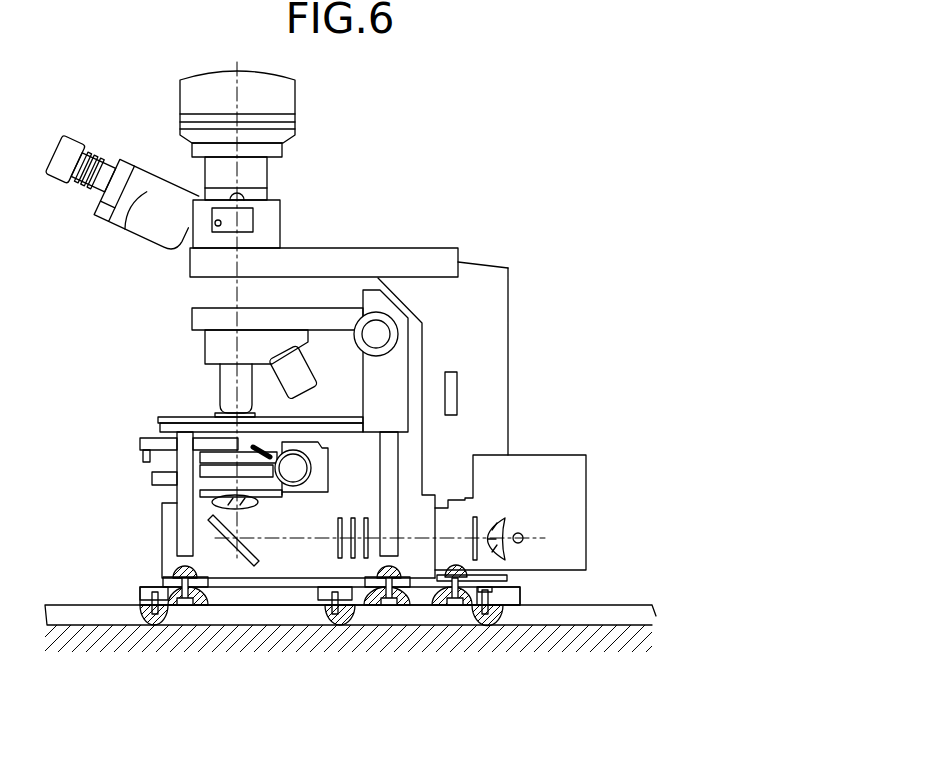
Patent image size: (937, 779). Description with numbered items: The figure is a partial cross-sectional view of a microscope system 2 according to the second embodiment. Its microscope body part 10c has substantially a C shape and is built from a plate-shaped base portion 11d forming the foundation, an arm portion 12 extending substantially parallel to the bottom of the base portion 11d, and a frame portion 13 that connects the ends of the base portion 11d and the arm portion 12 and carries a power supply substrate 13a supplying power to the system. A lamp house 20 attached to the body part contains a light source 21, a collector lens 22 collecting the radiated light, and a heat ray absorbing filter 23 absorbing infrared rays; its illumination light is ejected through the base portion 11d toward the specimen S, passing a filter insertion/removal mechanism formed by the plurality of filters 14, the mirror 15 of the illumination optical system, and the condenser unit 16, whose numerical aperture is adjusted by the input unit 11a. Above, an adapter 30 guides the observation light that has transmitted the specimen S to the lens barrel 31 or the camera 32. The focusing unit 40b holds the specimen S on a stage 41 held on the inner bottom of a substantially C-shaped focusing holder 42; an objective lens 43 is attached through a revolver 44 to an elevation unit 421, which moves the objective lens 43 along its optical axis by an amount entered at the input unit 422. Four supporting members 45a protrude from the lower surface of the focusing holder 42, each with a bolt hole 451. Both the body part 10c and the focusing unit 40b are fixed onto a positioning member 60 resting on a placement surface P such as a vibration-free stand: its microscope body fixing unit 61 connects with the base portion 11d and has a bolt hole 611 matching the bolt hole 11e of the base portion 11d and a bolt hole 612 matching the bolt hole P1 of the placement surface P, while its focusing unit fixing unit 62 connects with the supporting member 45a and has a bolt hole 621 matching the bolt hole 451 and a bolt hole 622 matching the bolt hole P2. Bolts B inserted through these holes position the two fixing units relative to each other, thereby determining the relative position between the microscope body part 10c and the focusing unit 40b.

The microscope system 2 is at (410, 116).
The camera 32 is at (292, 95).
The lens barrel 31 is at (133, 157).
The adapter 30 is at (272, 212).
The arm portion 12 is at (374, 256).
The microscope body part 10c is at (484, 250).
The frame portion 13 is at (493, 425).
The power supply substrate 13a is at (457, 393).
The elevation unit 421 is at (197, 318).
The focusing holder 42 is at (398, 360).
The input unit 422 is at (398, 332).
The revolver 44 is at (213, 345).
The focusing unit 40b is at (138, 357).
The objective lens 43 is at (228, 380).
The specimen S is at (215, 413).
The stage 41 is at (158, 420).
The condenser unit 16 is at (128, 458).
The input unit 11a is at (313, 463).
The filters 14 is at (366, 516).
The supporting member 45a is at (178, 493).
The mirror 15 is at (208, 530).
The base portion 11d is at (273, 555).
The lamp house 20 is at (570, 472).
The heat ray absorbing filter 23 is at (484, 510).
The light source 21 is at (522, 536).
The collector lens 22 is at (479, 548).
The positioning member 60 is at (540, 578).
The bolt hole 451 is at (170, 560).
The focusing unit fixing unit 62 is at (232, 598).
The bolt hole 621 is at (190, 628).
The bolt B is at (160, 586).
The bolt hole 622 is at (142, 598).
The microscope body fixing unit 61 is at (512, 597).
The bolt hole 612 is at (503, 603).
The bolt hole 611 is at (473, 628).
The bolt hole P2 is at (164, 626).
The bolt hole P1 is at (497, 626).
The bolt hole 11e is at (438, 584).
The placement surface P is at (575, 612).